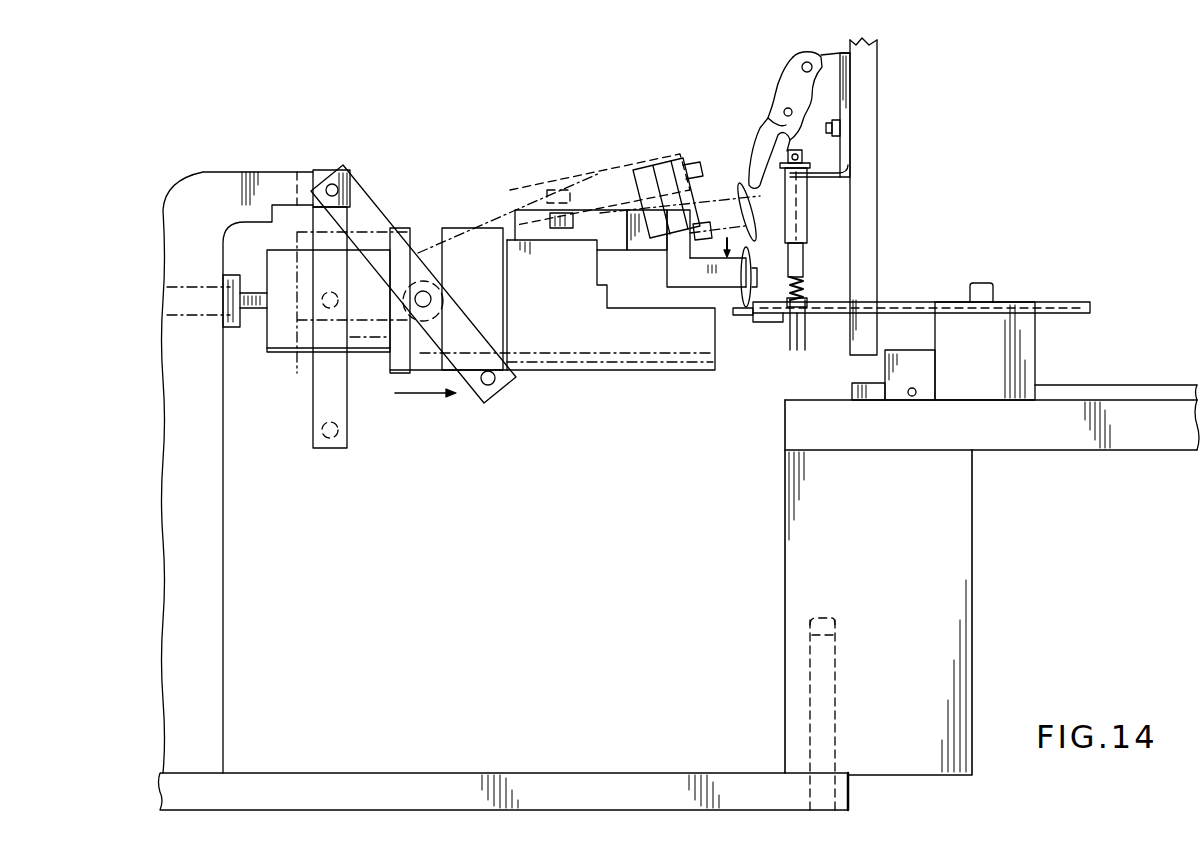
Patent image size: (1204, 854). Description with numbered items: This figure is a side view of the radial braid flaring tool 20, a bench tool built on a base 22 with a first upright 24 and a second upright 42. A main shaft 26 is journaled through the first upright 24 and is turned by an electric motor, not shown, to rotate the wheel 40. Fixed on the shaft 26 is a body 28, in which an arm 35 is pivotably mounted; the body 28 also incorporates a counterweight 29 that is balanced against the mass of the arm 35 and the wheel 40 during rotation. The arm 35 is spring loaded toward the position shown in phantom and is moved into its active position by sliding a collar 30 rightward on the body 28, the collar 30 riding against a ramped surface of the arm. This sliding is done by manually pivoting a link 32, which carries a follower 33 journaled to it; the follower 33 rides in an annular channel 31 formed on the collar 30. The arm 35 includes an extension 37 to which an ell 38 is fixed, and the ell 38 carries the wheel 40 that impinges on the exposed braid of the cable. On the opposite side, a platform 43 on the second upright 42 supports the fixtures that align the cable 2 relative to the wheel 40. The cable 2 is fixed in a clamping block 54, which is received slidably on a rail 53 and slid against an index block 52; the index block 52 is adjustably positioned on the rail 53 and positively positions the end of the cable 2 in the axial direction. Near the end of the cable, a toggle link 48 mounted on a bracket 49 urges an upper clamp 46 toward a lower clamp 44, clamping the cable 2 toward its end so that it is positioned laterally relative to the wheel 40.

The cable 2 is at (735, 330).
The braid flaring tool 20 is at (445, 148).
The base 22 is at (459, 771).
The first upright 24 is at (214, 558).
The main shaft 26 is at (252, 317).
The body 28 is at (285, 353).
The counterweight 29 is at (637, 372).
The collar 30 is at (512, 333).
The annular channel 31 is at (422, 240).
The link 32 is at (495, 388).
The follower 33 is at (453, 299).
The arm 35 is at (530, 250).
The extension 37 is at (586, 212).
The ell 38 is at (668, 273).
The wheel 40 is at (738, 297).
The second upright 42 is at (785, 568).
The platform 43 is at (792, 437).
The lower clamp 44 is at (763, 323).
The upper clamp 46 is at (833, 298).
The toggle link 48 is at (772, 113).
The bracket 49 is at (847, 117).
The index block 52 is at (908, 350).
The rail 53 is at (1095, 387).
The clamping block 54 is at (1010, 302).